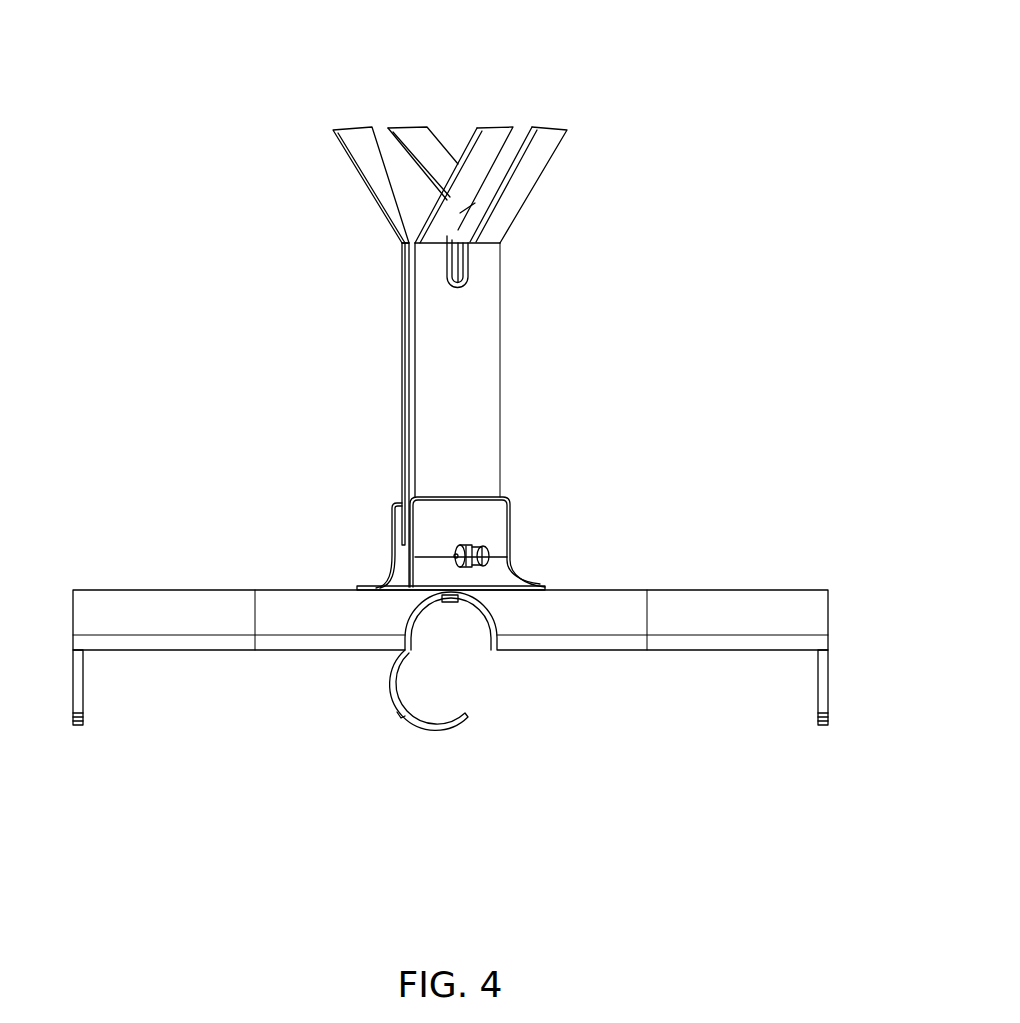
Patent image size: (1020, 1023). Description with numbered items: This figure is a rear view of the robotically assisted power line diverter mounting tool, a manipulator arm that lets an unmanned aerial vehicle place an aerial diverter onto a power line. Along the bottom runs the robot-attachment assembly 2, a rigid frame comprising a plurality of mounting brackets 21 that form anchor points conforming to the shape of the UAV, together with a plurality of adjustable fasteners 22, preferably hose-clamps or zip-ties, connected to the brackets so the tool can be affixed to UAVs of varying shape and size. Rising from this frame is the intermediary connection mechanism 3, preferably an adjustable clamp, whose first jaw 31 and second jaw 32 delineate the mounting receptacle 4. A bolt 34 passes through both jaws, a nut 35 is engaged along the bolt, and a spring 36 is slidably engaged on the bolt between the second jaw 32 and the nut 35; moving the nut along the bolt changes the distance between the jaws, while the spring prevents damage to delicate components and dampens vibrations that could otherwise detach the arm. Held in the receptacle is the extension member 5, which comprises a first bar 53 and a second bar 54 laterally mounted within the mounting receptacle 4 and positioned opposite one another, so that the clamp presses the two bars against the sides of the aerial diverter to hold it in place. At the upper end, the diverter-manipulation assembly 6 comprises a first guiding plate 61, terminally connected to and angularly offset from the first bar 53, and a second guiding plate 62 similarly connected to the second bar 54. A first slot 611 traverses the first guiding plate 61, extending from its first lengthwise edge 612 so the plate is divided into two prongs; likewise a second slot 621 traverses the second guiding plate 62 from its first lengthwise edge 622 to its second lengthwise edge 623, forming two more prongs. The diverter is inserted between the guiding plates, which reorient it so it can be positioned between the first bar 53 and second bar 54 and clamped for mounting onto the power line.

The robot-attachment assembly 2 is at (834, 572).
The mounting brackets 21 is at (165, 602).
The adjustable fasteners 22 is at (78, 690).
The intermediary connection mechanism 3 is at (325, 511).
The first jaw 31 is at (395, 498).
The second jaw 32 is at (505, 505).
The bolt 34 is at (488, 553).
The nut 35 is at (482, 548).
The spring 36 is at (455, 547).
The mounting receptacle 4 is at (403, 554).
The extension member 5 is at (637, 372).
The first bar 53 is at (403, 445).
The second bar 54 is at (495, 368).
The diverter-manipulation assembly 6 is at (218, 182).
The first guiding plate 61 is at (428, 144).
The first slot 611 is at (389, 150).
The first lengthwise edge of the first guiding plate 612 is at (341, 125).
The second hook 62 is at (520, 197).
The first arm of second hook 621 is at (515, 138).
The first lengthwise edge of the second guiding plate 622 is at (550, 121).
The second lengthwise edge of the second guiding plate 623 is at (489, 250).